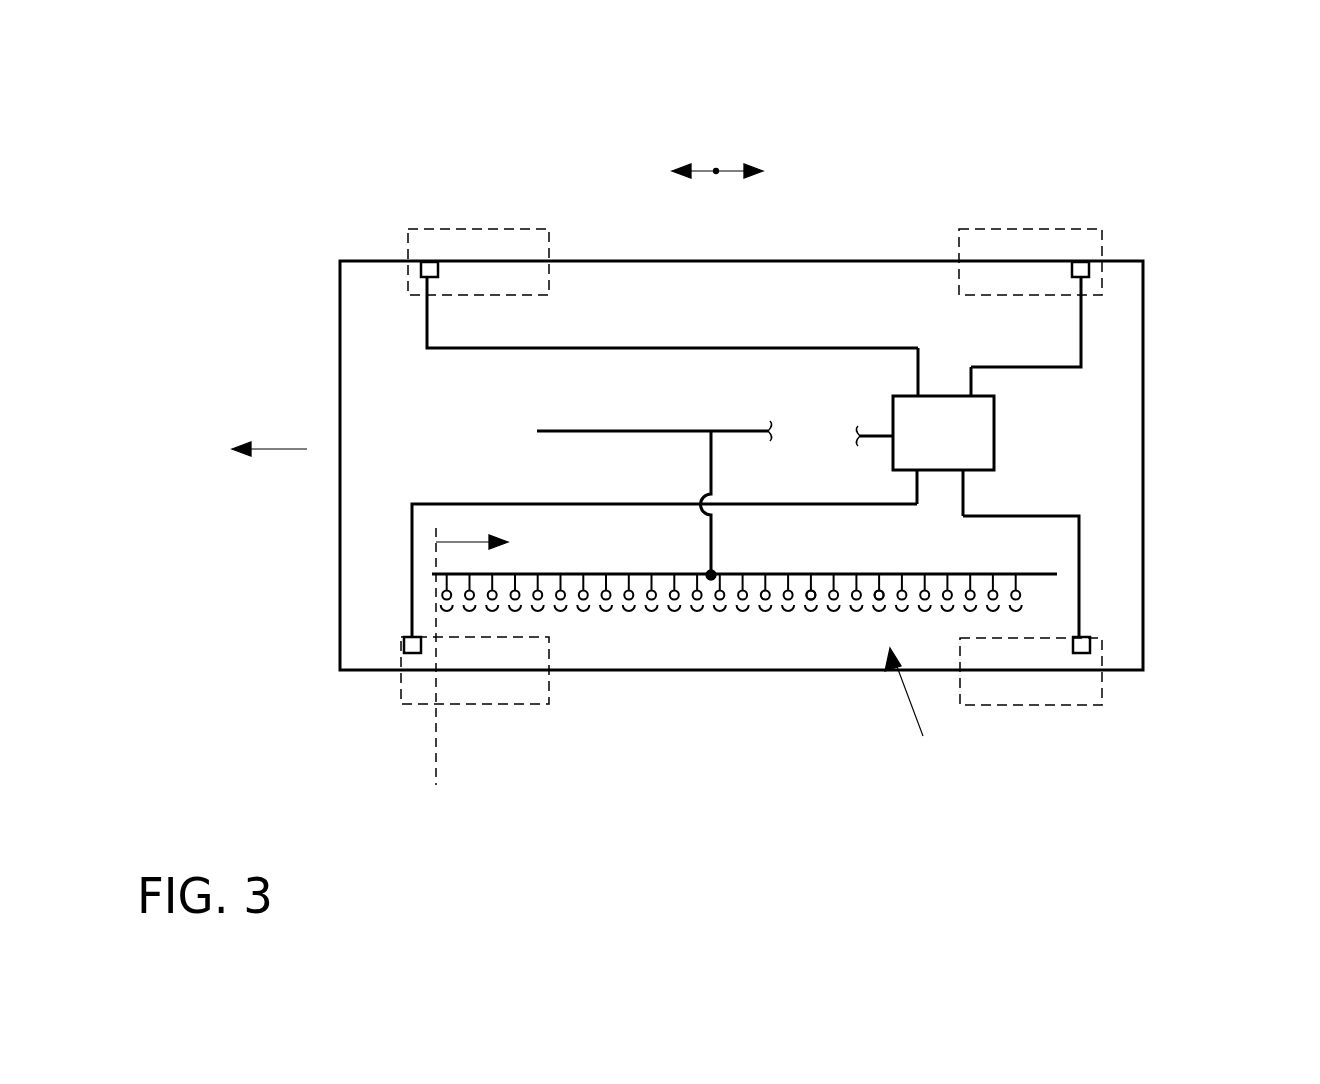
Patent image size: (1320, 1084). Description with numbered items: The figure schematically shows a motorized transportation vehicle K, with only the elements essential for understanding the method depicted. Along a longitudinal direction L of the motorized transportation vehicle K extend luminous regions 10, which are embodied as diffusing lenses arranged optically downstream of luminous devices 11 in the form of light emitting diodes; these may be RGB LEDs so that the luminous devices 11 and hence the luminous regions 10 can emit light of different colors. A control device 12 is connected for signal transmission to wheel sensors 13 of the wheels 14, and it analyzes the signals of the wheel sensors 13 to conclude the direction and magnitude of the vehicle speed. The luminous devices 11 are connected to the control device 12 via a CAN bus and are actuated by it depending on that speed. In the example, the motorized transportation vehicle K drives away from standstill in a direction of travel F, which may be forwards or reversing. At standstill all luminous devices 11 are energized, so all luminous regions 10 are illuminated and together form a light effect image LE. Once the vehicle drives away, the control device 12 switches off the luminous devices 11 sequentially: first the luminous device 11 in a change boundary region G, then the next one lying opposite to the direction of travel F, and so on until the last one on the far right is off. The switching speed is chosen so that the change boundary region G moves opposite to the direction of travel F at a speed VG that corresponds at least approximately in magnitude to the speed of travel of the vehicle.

The luminous regions 10 is at (675, 610).
The luminous devices 11 is at (876, 595).
The control device 12 is at (993, 431).
The wheel sensors 13 is at (430, 268).
The wheels 14 is at (529, 229).
The motorized transportation vehicle K is at (1185, 242).
The longitudinal direction L is at (716, 171).
The CAN bus CAN is at (878, 436).
The change boundary region G is at (436, 542).
The speed of the change boundary region VG is at (477, 542).
The direction of travel F is at (257, 467).
The light effect image LE is at (919, 712).